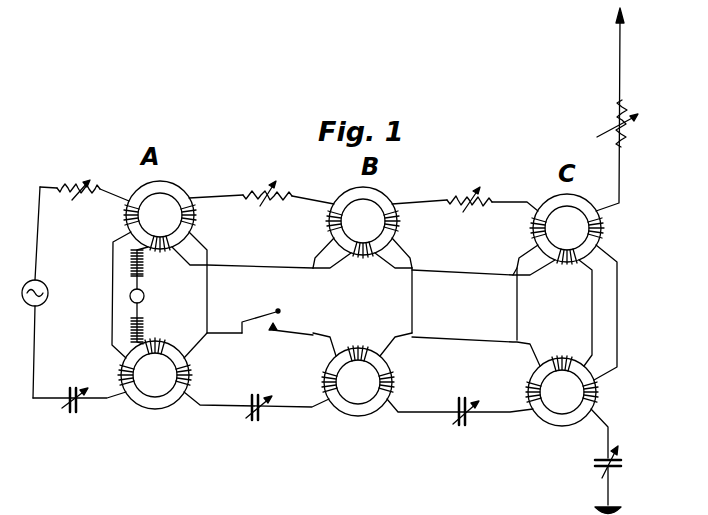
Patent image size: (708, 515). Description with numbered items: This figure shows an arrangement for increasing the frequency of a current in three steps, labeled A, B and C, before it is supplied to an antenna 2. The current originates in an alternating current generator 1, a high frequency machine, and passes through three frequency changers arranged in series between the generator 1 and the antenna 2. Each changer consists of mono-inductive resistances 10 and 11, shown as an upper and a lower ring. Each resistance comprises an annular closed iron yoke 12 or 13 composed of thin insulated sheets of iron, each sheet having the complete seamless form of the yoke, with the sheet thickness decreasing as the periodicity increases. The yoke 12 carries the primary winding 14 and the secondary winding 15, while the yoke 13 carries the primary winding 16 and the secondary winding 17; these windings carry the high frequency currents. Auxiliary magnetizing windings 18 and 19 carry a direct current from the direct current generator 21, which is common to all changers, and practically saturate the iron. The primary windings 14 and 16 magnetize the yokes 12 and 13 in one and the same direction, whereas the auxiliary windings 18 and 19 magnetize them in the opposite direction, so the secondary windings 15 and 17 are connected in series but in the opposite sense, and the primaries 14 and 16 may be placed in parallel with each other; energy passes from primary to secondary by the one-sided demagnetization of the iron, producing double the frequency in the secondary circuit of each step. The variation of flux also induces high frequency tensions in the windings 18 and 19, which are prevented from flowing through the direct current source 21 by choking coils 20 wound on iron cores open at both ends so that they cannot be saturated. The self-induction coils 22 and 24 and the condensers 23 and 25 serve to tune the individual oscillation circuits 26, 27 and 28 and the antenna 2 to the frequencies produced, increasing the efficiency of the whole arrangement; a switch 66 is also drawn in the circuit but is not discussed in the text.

The alternating current generator 1 is at (44, 286).
The antenna 2 is at (619, 63).
The mono-inductive resistance 10 is at (363, 221).
The mono-inductive resistance 11 is at (358, 383).
The closed iron yoke 12 is at (172, 186).
The closed iron yoke 13 is at (158, 409).
The primary winding 14 is at (124, 216).
The secondary winding 15 is at (196, 216).
The primary winding 16 is at (118, 375).
The secondary winding 17 is at (192, 377).
The auxiliary magnetizing winding 18 is at (363, 262).
The auxiliary magnetizing winding 19 is at (358, 345).
The choking coil 20 is at (131, 262).
The direct current generator 21 is at (130, 296).
The self-induction coil 22 is at (274, 186).
The condenser 23 is at (270, 420).
The self-induction coil 24 is at (613, 123).
The condenser 25 is at (595, 463).
The oscillation circuit 26 is at (41, 222).
The oscillation circuit 27 is at (207, 295).
The oscillation circuit 28 is at (412, 305).
The switch 66 is at (262, 313).